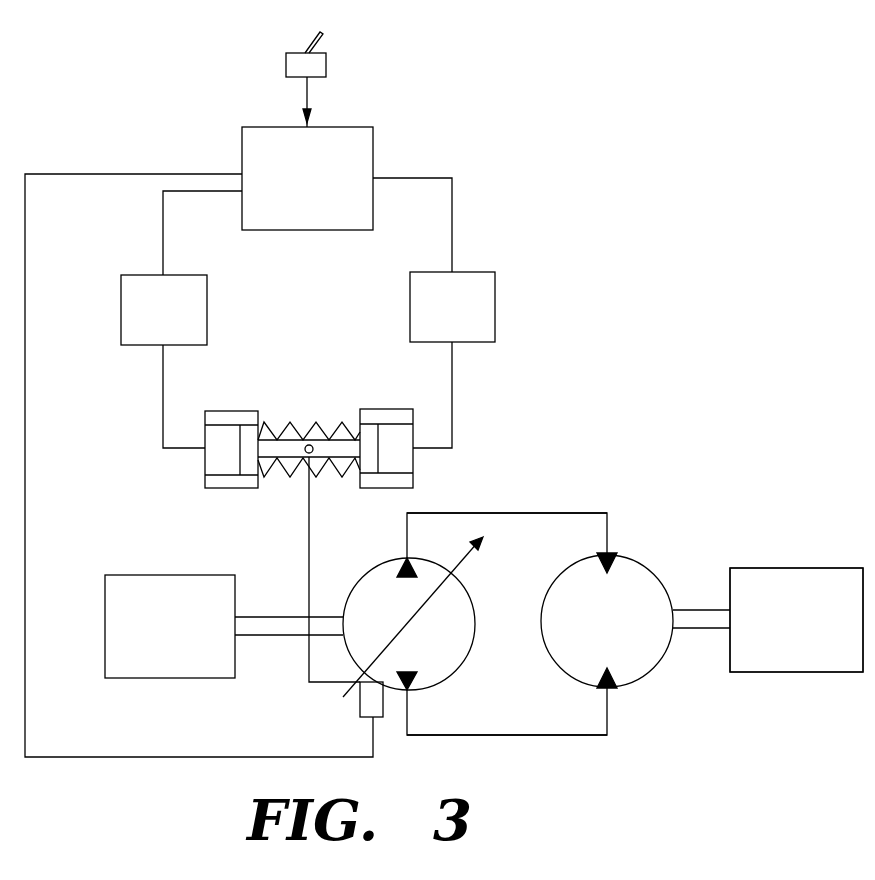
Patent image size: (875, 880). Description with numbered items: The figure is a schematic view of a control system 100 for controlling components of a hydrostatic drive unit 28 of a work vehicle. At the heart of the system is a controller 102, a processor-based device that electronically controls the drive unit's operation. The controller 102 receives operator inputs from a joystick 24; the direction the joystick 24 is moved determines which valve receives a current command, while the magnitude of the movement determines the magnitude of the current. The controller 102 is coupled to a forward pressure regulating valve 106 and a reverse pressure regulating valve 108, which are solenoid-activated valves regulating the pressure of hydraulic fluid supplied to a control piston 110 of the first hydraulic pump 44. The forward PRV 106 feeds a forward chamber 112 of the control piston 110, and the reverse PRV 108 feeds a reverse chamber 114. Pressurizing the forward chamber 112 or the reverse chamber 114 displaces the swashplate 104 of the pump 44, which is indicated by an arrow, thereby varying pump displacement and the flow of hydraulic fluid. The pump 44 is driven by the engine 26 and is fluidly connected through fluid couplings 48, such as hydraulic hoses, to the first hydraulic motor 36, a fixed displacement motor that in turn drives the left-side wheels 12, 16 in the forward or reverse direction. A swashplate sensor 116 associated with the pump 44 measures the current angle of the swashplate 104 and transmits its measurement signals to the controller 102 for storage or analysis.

The control system 100 is at (712, 203).
The joystick 24 is at (286, 68).
The controller 102 is at (330, 194).
The reverse pressure regulating valve 108 is at (186, 322).
The forward pressure regulating valve 106 is at (474, 320).
The control piston 110 is at (299, 411).
The reverse chamber 114 is at (220, 461).
The forward chamber 112 is at (400, 460).
The hydrostatic drive unit 28 is at (538, 470).
The fluid couplings 48 is at (563, 513).
The first hydraulic pump 44 is at (443, 680).
The swashplate 104 is at (393, 643).
The first hydraulic motor 36 is at (638, 560).
The engine 26 is at (183, 642).
The left-side wheel 12 is at (825, 634).
The left-side wheel 16 is at (796, 620).
The swashplate sensor 116 is at (361, 703).